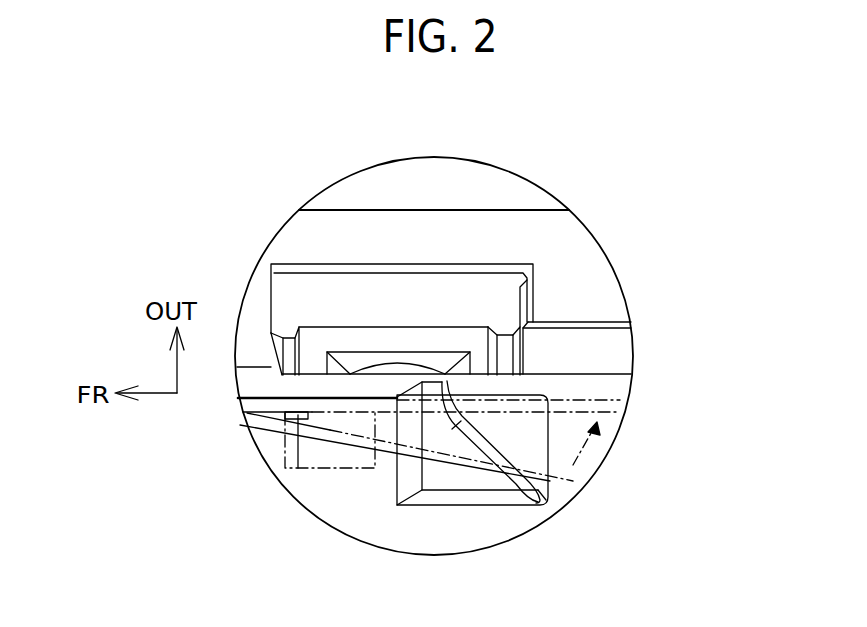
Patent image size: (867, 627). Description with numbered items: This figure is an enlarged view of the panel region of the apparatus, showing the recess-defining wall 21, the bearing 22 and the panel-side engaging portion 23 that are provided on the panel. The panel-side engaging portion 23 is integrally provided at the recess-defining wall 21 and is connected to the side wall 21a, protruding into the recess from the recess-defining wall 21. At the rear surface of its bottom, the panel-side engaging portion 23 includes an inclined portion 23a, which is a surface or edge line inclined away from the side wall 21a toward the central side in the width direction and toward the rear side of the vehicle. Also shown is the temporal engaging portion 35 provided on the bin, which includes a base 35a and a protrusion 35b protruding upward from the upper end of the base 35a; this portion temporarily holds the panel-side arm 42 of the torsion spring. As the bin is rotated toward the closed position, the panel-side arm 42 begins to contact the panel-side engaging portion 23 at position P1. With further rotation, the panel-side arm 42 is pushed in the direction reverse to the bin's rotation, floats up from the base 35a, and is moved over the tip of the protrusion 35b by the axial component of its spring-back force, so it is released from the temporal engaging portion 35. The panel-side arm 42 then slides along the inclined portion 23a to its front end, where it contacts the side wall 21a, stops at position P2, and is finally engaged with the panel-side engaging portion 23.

The bearing 22 is at (395, 368).
The recess-defining wall 21 is at (552, 348).
The side wall 21a is at (537, 345).
The panel-side engaging portion 23 is at (453, 498).
The inclined portion 23a is at (540, 440).
The temporal engaging portion 35 is at (335, 468).
The base 35a is at (357, 458).
The protrusion 35b is at (298, 468).
The panel-side arm 42 is at (275, 432).
The position P1 is at (573, 481).
The position P2 is at (620, 400).